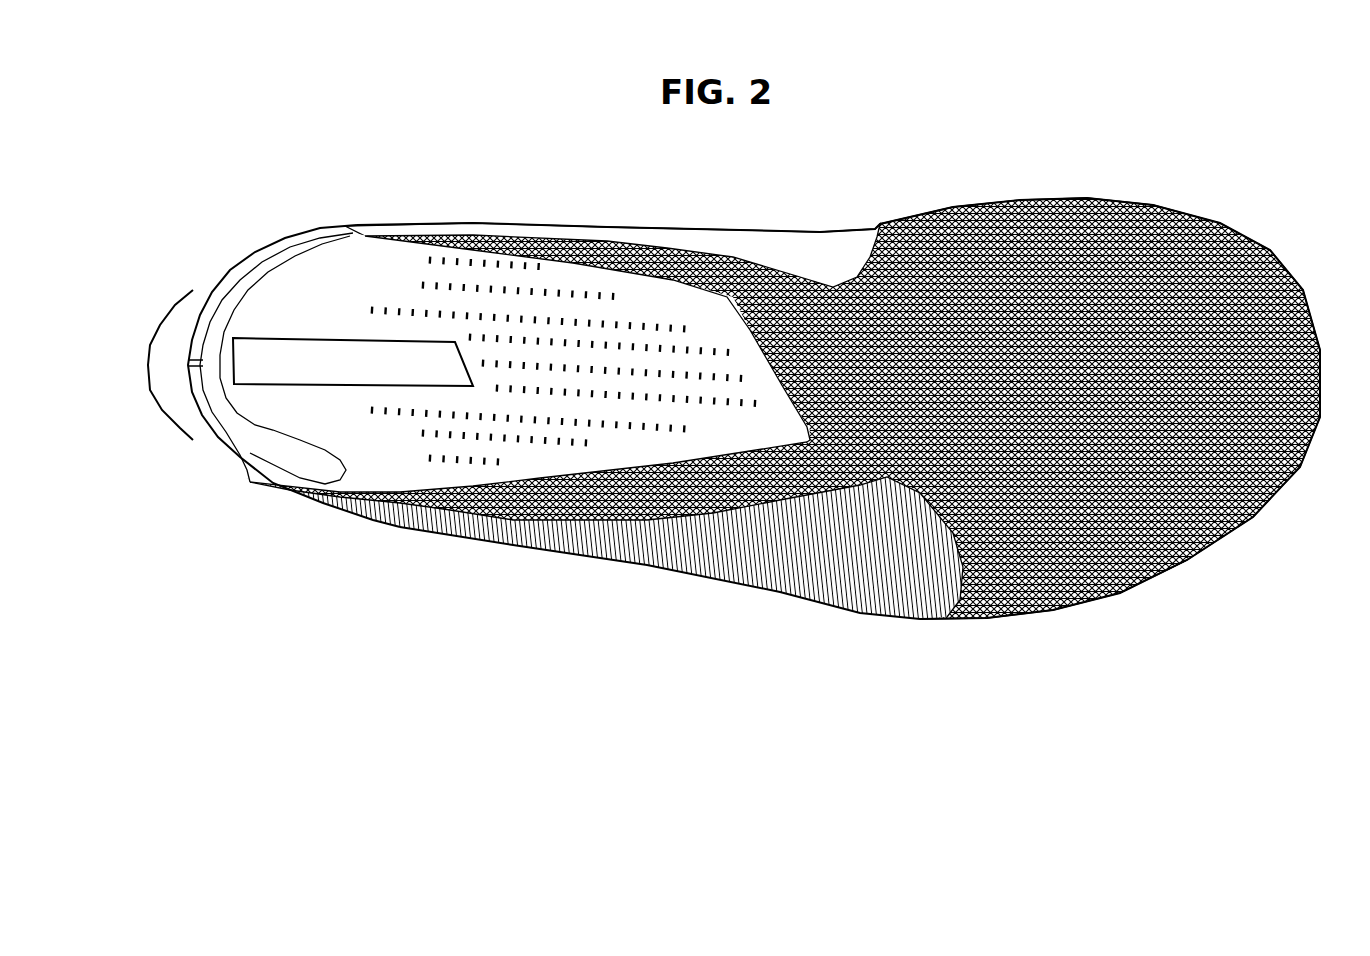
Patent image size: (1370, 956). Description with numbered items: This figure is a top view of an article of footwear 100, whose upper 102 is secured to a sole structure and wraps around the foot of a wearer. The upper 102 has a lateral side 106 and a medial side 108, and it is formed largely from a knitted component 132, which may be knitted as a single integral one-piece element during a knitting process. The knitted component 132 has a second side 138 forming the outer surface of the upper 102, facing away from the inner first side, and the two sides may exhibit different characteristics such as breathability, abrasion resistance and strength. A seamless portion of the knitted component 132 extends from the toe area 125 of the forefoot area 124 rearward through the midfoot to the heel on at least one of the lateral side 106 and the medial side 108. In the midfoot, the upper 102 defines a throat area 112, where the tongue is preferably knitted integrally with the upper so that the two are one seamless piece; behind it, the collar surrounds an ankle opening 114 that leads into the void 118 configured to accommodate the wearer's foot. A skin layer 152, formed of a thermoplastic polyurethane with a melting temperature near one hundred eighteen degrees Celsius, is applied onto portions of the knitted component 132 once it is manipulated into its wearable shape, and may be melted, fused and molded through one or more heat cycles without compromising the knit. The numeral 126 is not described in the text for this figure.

The article of footwear 100 is at (853, 153).
The upper 102 is at (1210, 224).
The lateral side 106 is at (1140, 573).
The medial side 108 is at (947, 210).
The throat area 112 is at (537, 387).
The ankle opening 114 is at (255, 255).
The void 118 is at (273, 458).
The forefoot area 124 is at (1251, 511).
The toe area 125 is at (1290, 457).
The sole element 126 is at (822, 570).
The knitted component 132 is at (1013, 227).
The second side 138 is at (1187, 390).
The skin layer 152 is at (888, 573).